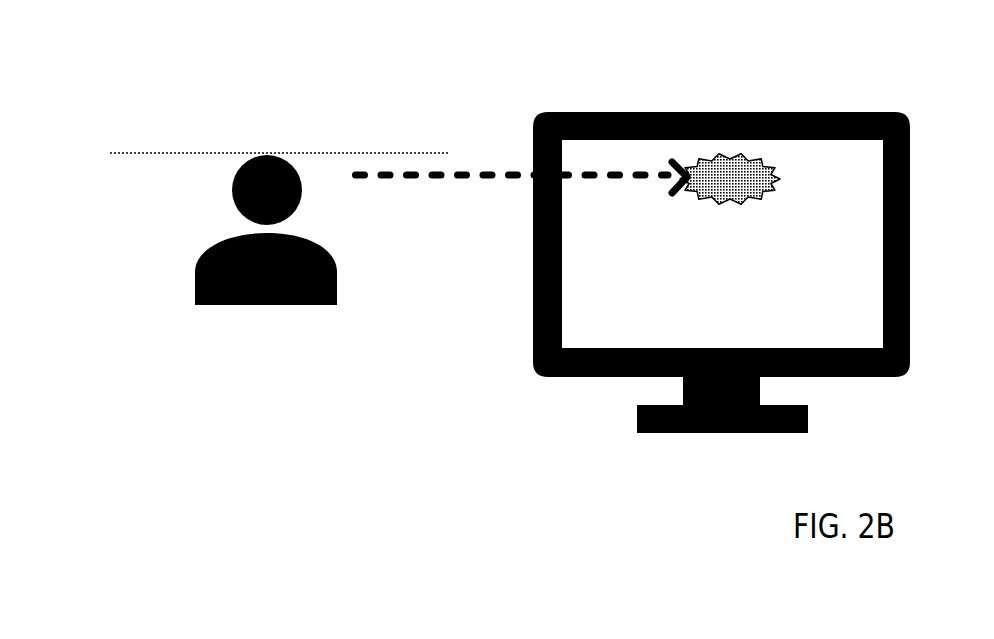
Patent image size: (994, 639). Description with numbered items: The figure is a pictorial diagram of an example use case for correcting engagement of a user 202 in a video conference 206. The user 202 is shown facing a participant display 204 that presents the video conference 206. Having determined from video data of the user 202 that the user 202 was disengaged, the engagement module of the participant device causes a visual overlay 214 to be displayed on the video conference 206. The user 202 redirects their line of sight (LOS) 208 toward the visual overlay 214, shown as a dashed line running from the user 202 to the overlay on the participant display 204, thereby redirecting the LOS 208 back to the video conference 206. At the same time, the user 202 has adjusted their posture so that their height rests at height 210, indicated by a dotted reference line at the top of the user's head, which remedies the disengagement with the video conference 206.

The user 202 is at (245, 366).
The participant display 204 is at (663, 113).
The video conference 206 is at (747, 311).
The line of sight (LOS) 208 is at (510, 176).
The height 210 is at (193, 153).
The visual overlay 214 is at (708, 188).